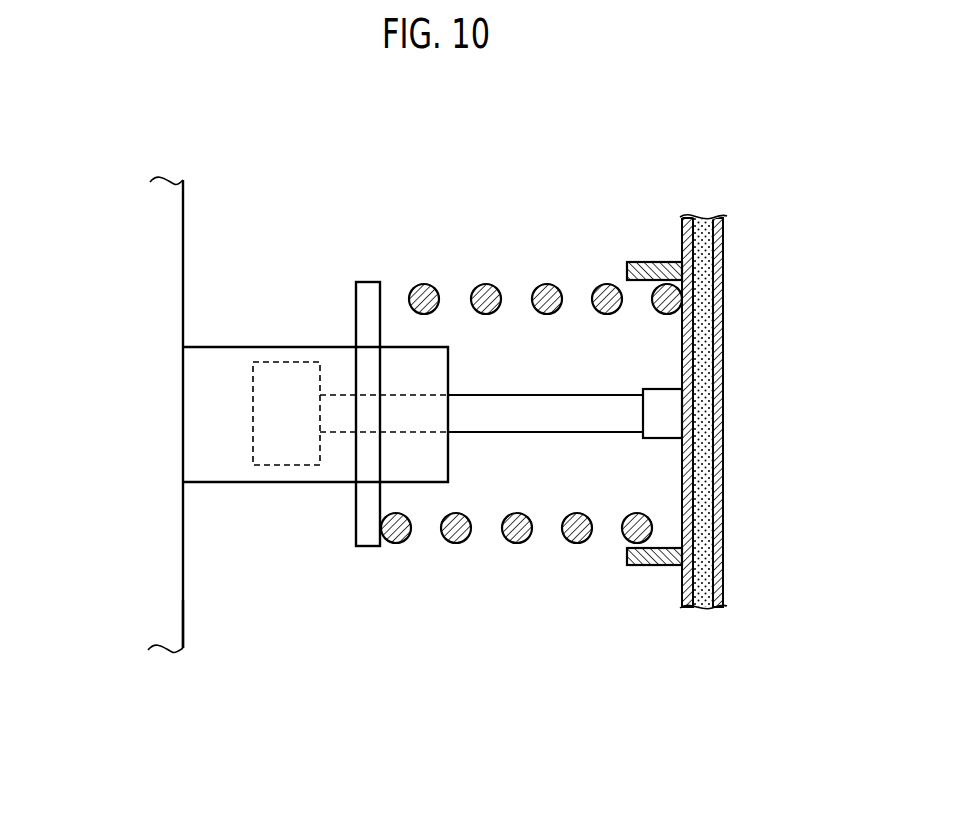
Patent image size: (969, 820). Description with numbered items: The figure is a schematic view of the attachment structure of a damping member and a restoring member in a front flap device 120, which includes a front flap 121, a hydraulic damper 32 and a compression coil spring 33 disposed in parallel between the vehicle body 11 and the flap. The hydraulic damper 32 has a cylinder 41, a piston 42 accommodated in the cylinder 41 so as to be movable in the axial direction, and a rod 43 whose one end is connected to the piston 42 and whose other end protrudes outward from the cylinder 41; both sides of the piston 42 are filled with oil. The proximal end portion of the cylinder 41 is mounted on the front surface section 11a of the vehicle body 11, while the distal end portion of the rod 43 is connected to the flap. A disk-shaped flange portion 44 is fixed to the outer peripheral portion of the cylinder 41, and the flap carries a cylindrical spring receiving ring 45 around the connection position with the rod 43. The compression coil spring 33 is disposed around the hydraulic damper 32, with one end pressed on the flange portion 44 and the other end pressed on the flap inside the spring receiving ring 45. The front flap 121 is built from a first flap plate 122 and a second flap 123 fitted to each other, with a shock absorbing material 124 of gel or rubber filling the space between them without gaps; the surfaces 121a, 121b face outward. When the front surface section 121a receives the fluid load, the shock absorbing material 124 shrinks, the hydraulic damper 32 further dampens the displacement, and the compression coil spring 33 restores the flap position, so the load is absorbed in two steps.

The vehicle body 11 is at (192, 213).
The front surface section 11a is at (183, 615).
The hydraulic damper 32 is at (299, 343).
The cylinder 41 is at (197, 441).
The piston 42 is at (282, 447).
The rod 43 is at (520, 405).
The flange portion 44 is at (368, 532).
The compression coil spring 33 is at (517, 552).
The spring receiving ring 45 is at (652, 262).
The front flap device 120 is at (766, 156).
The front flap 121 is at (725, 431).
The front surface section 121a is at (722, 597).
The second surface of panel 121b is at (682, 597).
The first flap plate 122 is at (684, 218).
The second flap 123 is at (722, 428).
The shock absorbing material 124 is at (703, 510).